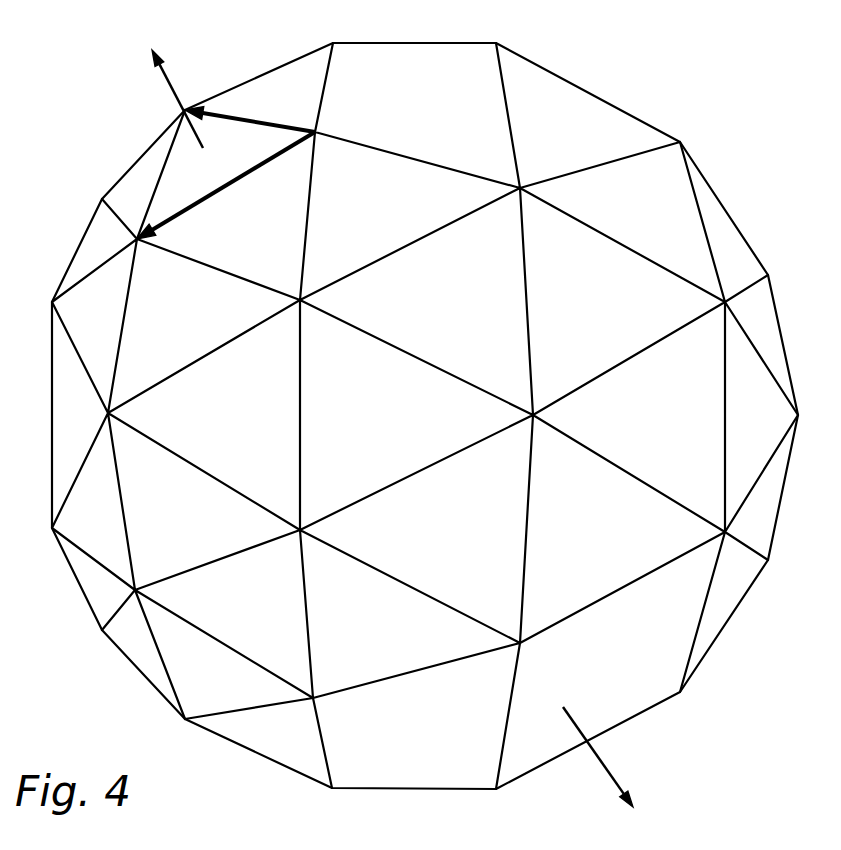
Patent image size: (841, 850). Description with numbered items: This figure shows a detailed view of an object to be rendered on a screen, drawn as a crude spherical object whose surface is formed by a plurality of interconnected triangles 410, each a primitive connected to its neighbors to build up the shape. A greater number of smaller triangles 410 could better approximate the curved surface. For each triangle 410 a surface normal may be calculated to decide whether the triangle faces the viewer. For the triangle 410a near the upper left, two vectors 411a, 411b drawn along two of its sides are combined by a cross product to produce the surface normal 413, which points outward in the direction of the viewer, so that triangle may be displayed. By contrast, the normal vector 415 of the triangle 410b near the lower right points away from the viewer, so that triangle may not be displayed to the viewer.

The triangle 410 is at (425, 416).
The triangle 410a is at (227, 128).
The triangle 410b is at (636, 702).
The vector 411a is at (272, 118).
The vector 411b is at (158, 173).
The surface normal 413 is at (173, 97).
The normal vector 415 is at (612, 766).